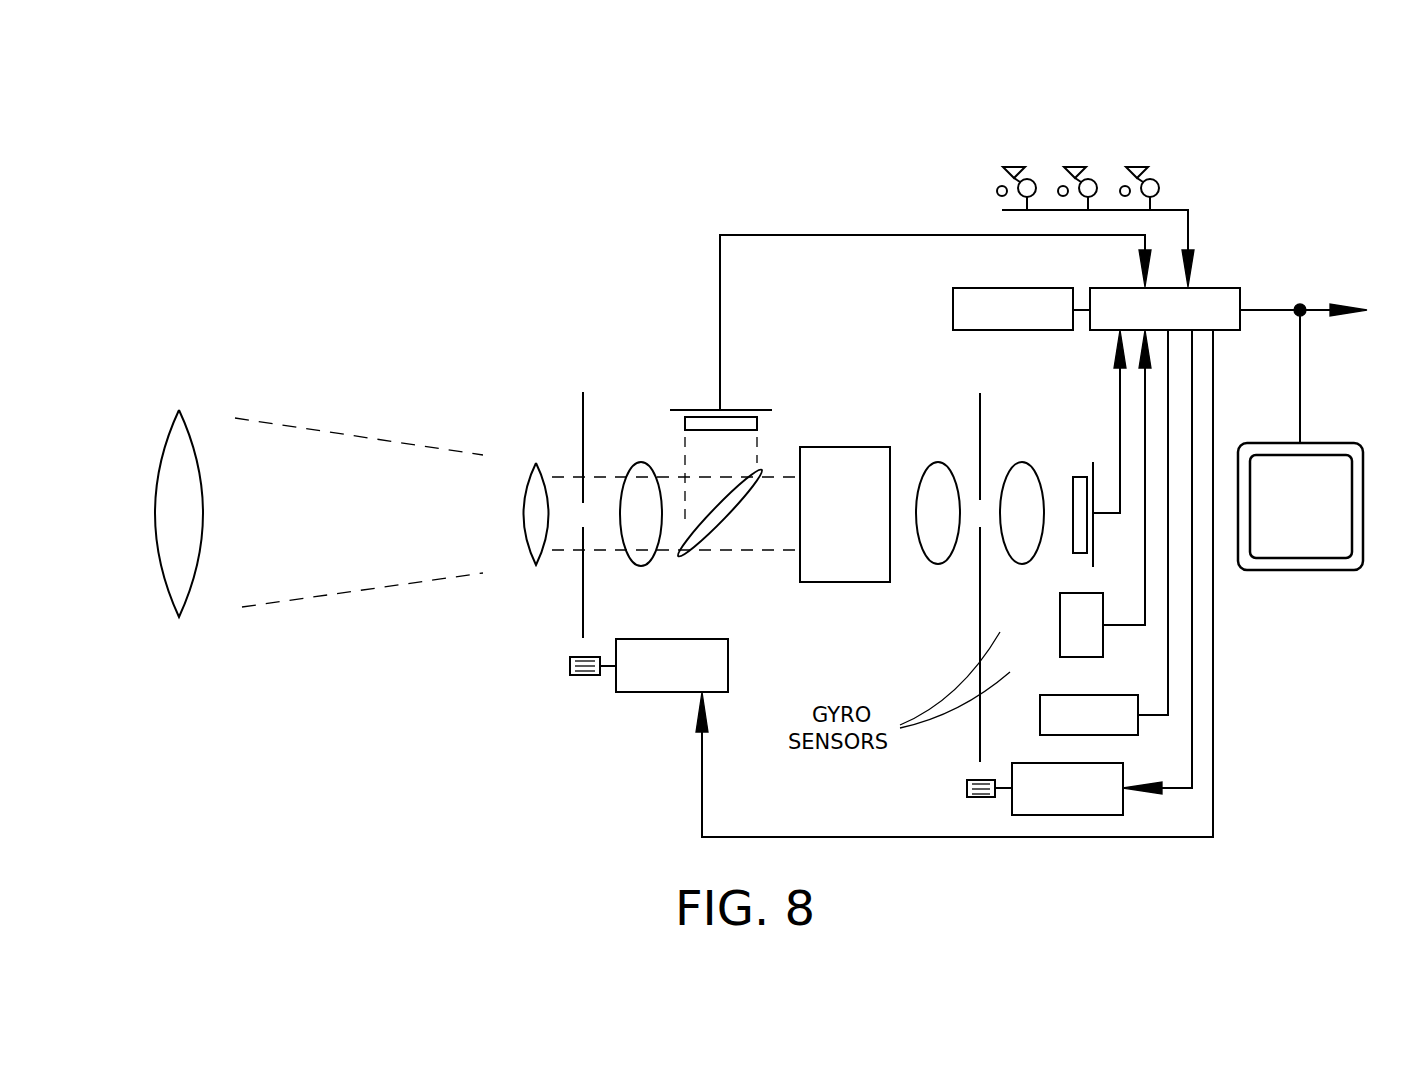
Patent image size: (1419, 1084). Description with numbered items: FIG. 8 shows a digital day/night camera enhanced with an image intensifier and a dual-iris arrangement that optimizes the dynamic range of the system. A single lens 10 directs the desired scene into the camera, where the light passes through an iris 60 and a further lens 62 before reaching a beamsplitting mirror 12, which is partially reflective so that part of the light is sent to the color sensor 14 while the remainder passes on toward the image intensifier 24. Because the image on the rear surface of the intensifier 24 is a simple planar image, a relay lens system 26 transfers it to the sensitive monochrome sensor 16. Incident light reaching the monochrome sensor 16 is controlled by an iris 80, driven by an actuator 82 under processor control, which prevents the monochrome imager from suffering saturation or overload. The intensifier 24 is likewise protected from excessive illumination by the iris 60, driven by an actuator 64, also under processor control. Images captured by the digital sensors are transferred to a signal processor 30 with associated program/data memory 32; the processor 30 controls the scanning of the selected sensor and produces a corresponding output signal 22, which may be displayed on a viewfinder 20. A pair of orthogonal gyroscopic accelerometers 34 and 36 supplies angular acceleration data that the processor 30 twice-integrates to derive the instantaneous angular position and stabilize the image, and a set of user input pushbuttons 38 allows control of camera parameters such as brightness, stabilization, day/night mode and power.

The lens 10 is at (548, 362).
The beamsplitting mirror 12 is at (845, 514).
The color sensor 14 is at (698, 405).
The monochrome sensor 16 is at (1083, 470).
The viewfinder 20 is at (1328, 570).
The output signal 22 is at (1322, 325).
The image intensifier 24 is at (850, 582).
The relay lens system 26 is at (1037, 397).
The signal processor 30 is at (1220, 287).
The program/data memory 32 is at (953, 305).
The gyroscopic accelerometer 34 is at (1060, 625).
The gyroscopic accelerometer 36 is at (1058, 695).
The user input pushbuttons 38 is at (1175, 165).
The iris 60 is at (578, 378).
The lens 62 is at (655, 462).
The actuator 64 is at (603, 695).
The iris 80 is at (975, 570).
The actuator 82 is at (955, 765).